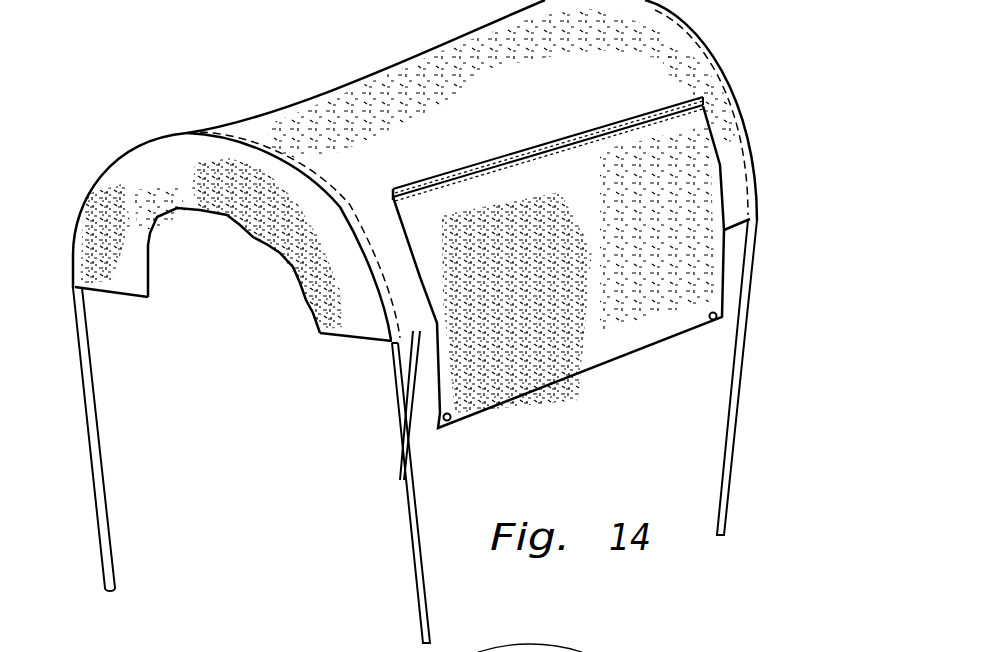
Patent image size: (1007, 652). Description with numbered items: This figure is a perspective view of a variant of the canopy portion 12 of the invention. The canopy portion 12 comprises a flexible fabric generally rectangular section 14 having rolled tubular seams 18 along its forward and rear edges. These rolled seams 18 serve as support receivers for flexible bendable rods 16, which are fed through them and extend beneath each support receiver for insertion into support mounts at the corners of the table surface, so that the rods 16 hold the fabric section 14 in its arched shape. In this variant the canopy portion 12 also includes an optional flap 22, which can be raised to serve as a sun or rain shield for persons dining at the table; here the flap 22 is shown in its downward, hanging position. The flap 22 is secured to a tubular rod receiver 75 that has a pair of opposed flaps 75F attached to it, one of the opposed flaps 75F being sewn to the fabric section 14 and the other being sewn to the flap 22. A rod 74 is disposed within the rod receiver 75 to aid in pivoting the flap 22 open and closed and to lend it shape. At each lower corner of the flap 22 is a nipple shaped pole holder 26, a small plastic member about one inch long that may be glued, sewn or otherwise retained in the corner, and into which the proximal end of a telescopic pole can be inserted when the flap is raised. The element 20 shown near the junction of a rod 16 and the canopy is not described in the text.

The canopy portion 12 is at (143, 78).
The flexible fabric generally rectangular section 14 is at (466, 97).
The flexible bendable rod 16 is at (415, 530).
The rolled tubular seam 18 is at (247, 143).
The leg bracket / corner fitting 20 is at (392, 350).
The flap 22 is at (562, 340).
The nipple shaped pole holder 26 is at (450, 423).
The rod 74 is at (390, 202).
The tubular rod receiver 75 is at (537, 153).
The opposed flaps 75F is at (613, 127).